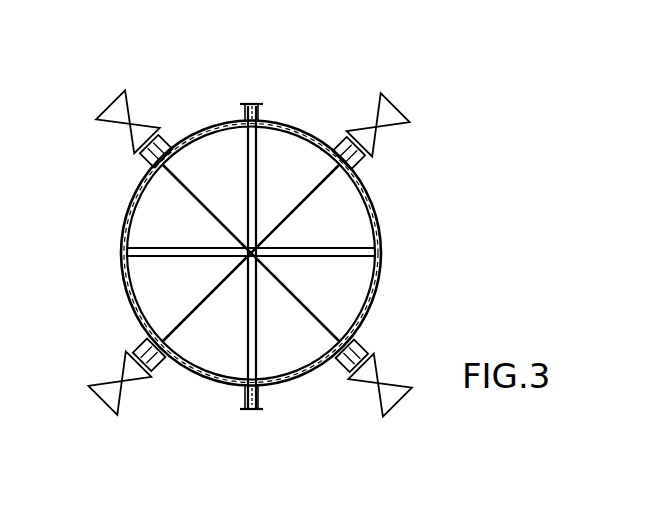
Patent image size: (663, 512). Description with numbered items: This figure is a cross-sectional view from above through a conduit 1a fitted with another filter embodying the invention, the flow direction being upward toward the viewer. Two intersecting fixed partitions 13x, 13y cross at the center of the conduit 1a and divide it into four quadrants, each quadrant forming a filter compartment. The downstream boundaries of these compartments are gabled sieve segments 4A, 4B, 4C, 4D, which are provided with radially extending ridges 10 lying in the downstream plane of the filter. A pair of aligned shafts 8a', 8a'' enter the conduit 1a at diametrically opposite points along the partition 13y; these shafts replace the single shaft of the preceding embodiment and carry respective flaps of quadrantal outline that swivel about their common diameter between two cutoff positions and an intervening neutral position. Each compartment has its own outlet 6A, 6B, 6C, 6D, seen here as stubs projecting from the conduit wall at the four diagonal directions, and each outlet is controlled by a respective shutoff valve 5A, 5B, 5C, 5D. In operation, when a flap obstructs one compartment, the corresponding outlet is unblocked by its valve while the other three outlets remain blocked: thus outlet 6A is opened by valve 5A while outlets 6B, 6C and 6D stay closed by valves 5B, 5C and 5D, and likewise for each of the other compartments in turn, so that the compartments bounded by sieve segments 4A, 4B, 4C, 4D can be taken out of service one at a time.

The conduit 1a is at (122, 226).
The gabled sieve segment 4A is at (313, 337).
The gabled sieve segment 4B is at (203, 347).
The gabled sieve segment 4C is at (357, 212).
The gabled sieve segment 4D is at (153, 192).
The shutoff valve 5A is at (397, 399).
The shutoff valve 5B is at (105, 401).
The shutoff valve 5C is at (398, 112).
The shutoff valve 5D is at (113, 113).
The outlet 6A is at (350, 377).
The outlet 6B is at (160, 373).
The outlet 6C is at (347, 145).
The outlet 6D is at (163, 143).
The shaft 8a' is at (239, 427).
The shaft 8a'' is at (283, 86).
The radially extending ridges 10 is at (267, 233).
The fixed partition 13x is at (283, 259).
The fixed partition 13y is at (251, 328).